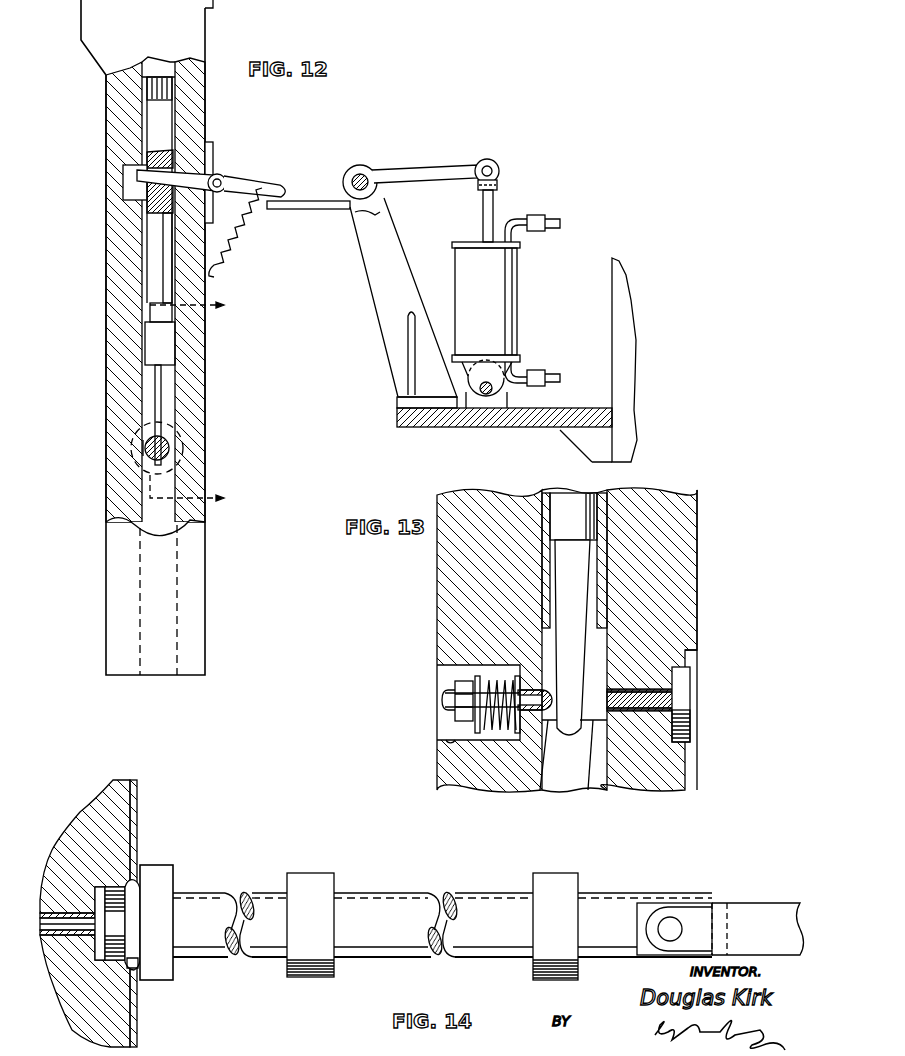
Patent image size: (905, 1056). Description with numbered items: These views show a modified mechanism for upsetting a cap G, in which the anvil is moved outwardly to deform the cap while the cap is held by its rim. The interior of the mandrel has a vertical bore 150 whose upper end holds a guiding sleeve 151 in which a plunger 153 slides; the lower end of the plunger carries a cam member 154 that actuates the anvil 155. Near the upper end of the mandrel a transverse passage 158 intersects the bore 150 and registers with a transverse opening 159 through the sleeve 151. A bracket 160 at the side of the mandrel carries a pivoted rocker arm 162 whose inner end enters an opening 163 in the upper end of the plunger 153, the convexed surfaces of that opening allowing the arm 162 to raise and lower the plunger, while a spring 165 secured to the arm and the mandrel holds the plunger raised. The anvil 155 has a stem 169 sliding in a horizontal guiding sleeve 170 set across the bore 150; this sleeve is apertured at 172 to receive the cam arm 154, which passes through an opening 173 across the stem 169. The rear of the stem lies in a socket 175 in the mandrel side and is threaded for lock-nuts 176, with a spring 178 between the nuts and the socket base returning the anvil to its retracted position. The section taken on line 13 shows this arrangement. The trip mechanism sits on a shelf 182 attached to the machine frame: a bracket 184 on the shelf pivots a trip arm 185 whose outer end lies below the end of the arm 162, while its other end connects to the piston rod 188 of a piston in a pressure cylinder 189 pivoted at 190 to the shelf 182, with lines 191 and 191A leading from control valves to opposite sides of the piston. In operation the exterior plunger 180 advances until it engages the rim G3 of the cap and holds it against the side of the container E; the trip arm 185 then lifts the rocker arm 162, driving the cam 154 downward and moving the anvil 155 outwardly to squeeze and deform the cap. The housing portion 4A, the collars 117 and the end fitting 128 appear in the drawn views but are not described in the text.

In FIG. 12, the guiding sleeve 151 is at (142, 255).
In FIG. 13, the guiding sleeve 151 is at (602, 552).
In FIG. 12, the transverse passage 158 is at (185, 158).
In FIG. 12, the bracket 160 is at (214, 166).
In FIG. 12, the rocker arm 162 is at (279, 189).
In FIG. 12, the opening 163 is at (137, 180).
In FIG. 12, the transverse opening 159 is at (147, 208).
In FIG. 12, the spring 165 is at (241, 238).
In FIG. 12, the plunger 153 is at (165, 293).
In FIG. 13, the plunger 153 is at (563, 516).
In FIG. 12, the cam member 154 is at (157, 397).
In FIG. 13, the cam member 154 is at (576, 605).
In FIG. 12, the section line 13 is at (198, 402).
In FIG. 12, the housing 4A is at (197, 432).
In FIG. 13, the housing 4A is at (676, 606).
In FIG. 12, the horizontal guiding sleeve 170 is at (170, 452).
In FIG. 13, the horizontal guiding sleeve 170 is at (691, 730).
In FIG. 14, the horizontal guiding sleeve 170 is at (62, 862).
In FIG. 12, the stem 169 is at (144, 452).
In FIG. 13, the stem 169 is at (640, 700).
In FIG. 14, the stem 169 is at (70, 920).
In FIG. 12, the vertical bore 150 is at (170, 527).
In FIG. 13, the vertical bore 150 is at (600, 656).
In FIG. 12, the trip arm 185 is at (315, 209).
In FIG. 12, the bracket 184 is at (372, 287).
In FIG. 12, the piston rod 188 is at (491, 208).
In FIG. 12, the pressure cylinder 189 is at (505, 300).
In FIG. 12, the line 191 is at (560, 221).
In FIG. 12, the line 191A is at (548, 378).
In FIG. 12, the pivot 190 is at (488, 396).
In FIG. 12, the shelf 182 is at (470, 428).
In FIG. 13, the anvil 155 is at (686, 705).
In FIG. 14, the anvil 155 is at (115, 917).
In FIG. 13, the spring 178 is at (487, 680).
In FIG. 13, the lock-nuts 176 is at (462, 712).
In FIG. 13, the socket 175 is at (450, 745).
In FIG. 13, the opening 173 is at (540, 790).
In FIG. 13, the aperture 172 is at (588, 790).
In FIG. 14, the container E is at (138, 825).
In FIG. 14, the cap G is at (140, 882).
In FIG. 14, the rim G3 is at (140, 970).
In FIG. 14, the exterior plunger 180 is at (373, 946).
In FIG. 14, the collar 117 is at (318, 967).
In FIG. 14, the end fitting 128 is at (746, 912).